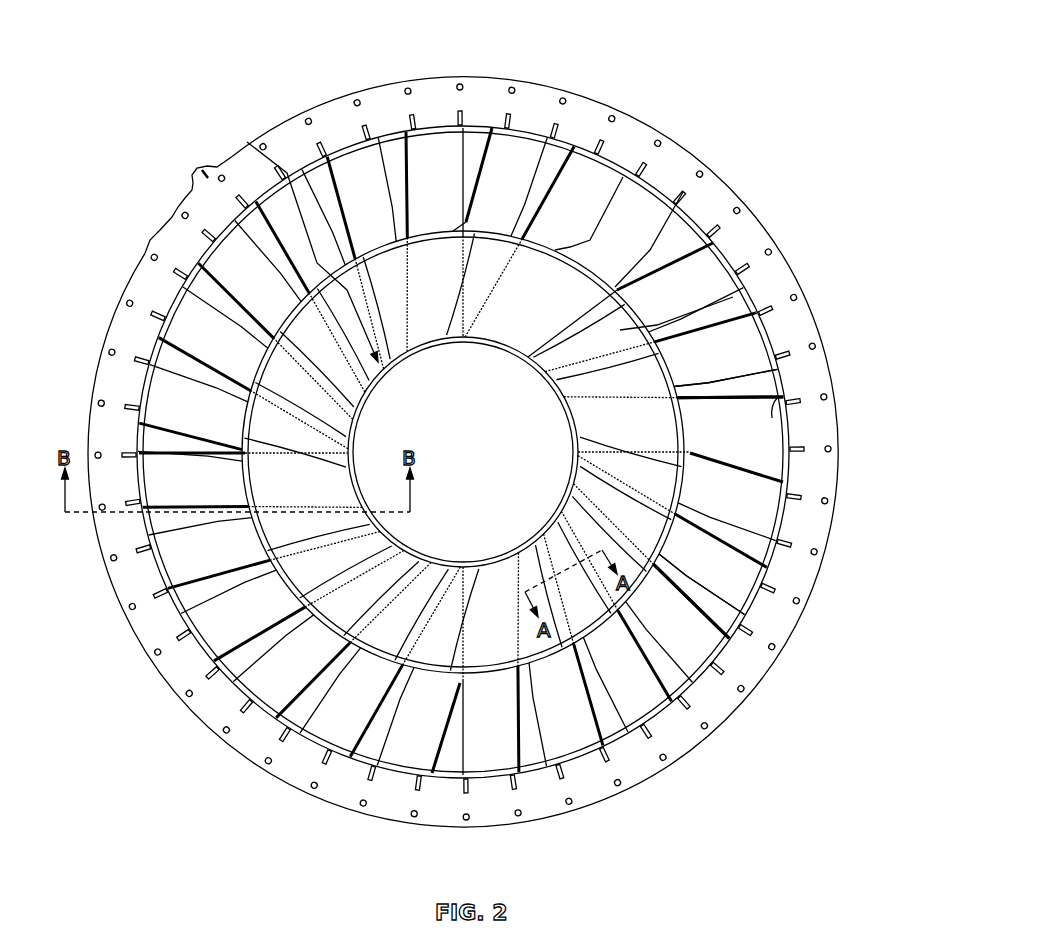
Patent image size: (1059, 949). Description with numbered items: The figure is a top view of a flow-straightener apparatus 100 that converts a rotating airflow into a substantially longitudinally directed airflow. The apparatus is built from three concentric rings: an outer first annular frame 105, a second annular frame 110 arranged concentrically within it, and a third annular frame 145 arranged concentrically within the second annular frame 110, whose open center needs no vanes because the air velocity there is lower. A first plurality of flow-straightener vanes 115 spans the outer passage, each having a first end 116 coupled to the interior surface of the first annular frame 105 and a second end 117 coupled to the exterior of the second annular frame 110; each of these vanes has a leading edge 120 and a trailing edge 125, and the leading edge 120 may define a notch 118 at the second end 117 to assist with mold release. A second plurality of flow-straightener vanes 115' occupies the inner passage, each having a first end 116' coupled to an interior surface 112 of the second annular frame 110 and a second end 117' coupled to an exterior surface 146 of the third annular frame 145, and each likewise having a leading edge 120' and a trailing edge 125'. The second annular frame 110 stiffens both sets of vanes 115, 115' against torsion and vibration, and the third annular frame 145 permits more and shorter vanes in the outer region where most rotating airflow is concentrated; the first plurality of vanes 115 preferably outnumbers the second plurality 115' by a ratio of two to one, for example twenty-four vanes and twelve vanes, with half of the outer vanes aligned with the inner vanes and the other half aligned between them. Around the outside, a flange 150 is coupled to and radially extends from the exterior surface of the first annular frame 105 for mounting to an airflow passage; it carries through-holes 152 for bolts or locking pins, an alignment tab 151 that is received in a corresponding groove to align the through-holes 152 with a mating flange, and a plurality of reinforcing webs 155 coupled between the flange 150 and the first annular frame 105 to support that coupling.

The flow-straightener apparatus 100 is at (662, 44).
The first annular frame 105 is at (203, 247).
The second annular frame 110 is at (793, 512).
The interior surface of the second annular frame 112 is at (444, 662).
The flow-straightener vanes 115 is at (231, 323).
The second plurality of flow-straightener vanes 115' is at (696, 301).
The first end 116 is at (710, 376).
The first end 116' is at (746, 615).
The second end 117 is at (768, 346).
The second end 117' is at (704, 552).
The notch 118 is at (660, 207).
The leading edge 120 is at (355, 702).
The leading edge 120' is at (210, 407).
The trailing edge 125 is at (418, 710).
The trailing edge 125' is at (202, 507).
The third annular frame 145 is at (725, 655).
The exterior surface of the third annular frame 146 is at (247, 142).
The flange 150 is at (243, 757).
The alignment tab 151 is at (197, 177).
The through-holes 152 is at (112, 568).
The reinforcing webs 155 is at (180, 640).